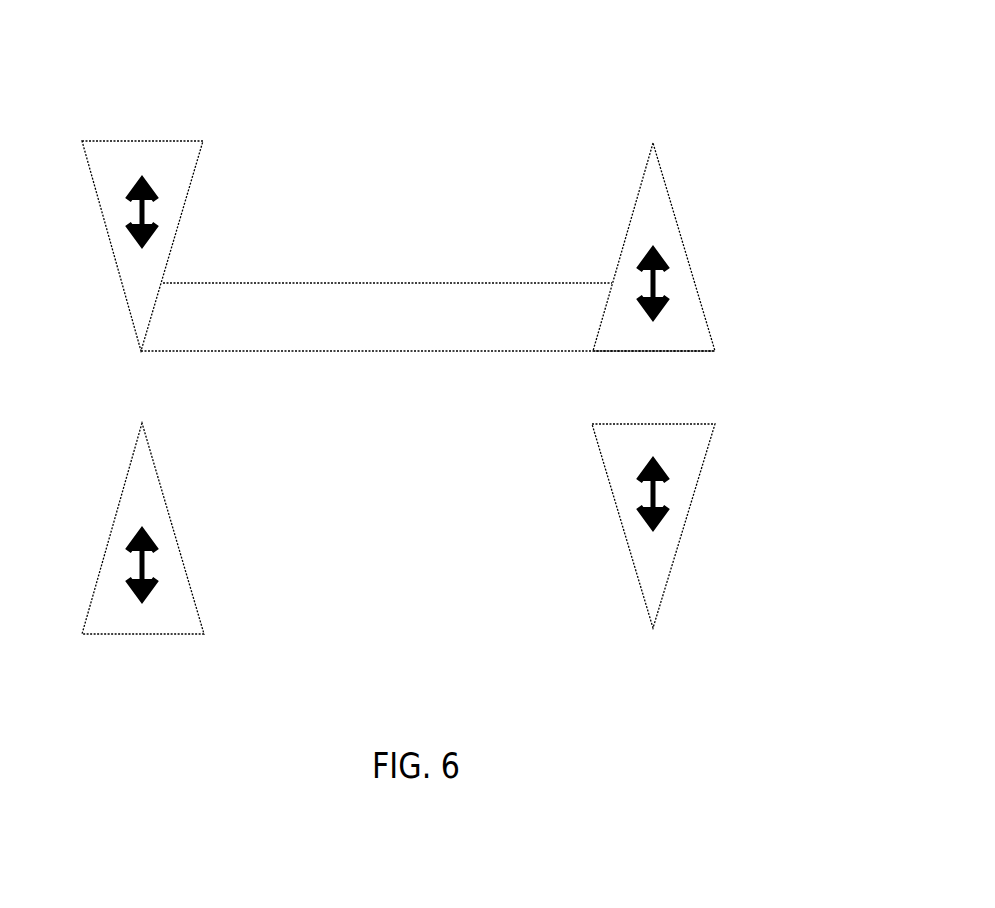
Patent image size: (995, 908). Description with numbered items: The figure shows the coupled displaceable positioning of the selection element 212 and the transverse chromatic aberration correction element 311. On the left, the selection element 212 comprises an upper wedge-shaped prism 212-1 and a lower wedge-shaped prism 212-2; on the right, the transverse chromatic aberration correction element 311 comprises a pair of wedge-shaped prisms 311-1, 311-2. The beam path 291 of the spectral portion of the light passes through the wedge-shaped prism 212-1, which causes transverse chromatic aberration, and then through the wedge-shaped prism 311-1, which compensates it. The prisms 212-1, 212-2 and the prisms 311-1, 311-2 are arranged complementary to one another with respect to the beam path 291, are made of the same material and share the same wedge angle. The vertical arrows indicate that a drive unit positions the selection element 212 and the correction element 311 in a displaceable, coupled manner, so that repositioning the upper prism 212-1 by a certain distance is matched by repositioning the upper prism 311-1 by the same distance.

The selection element 212 is at (269, 81).
The wedge-shaped prism 212-1 is at (173, 140).
The wedge-shaped prism 212-2 is at (160, 637).
The beam path 291 is at (396, 282).
The transverse chromatic aberration correction element 311 is at (778, 84).
The wedge-shaped prism 311-1 is at (670, 197).
The wedge-shaped prism 311-2 is at (653, 630).